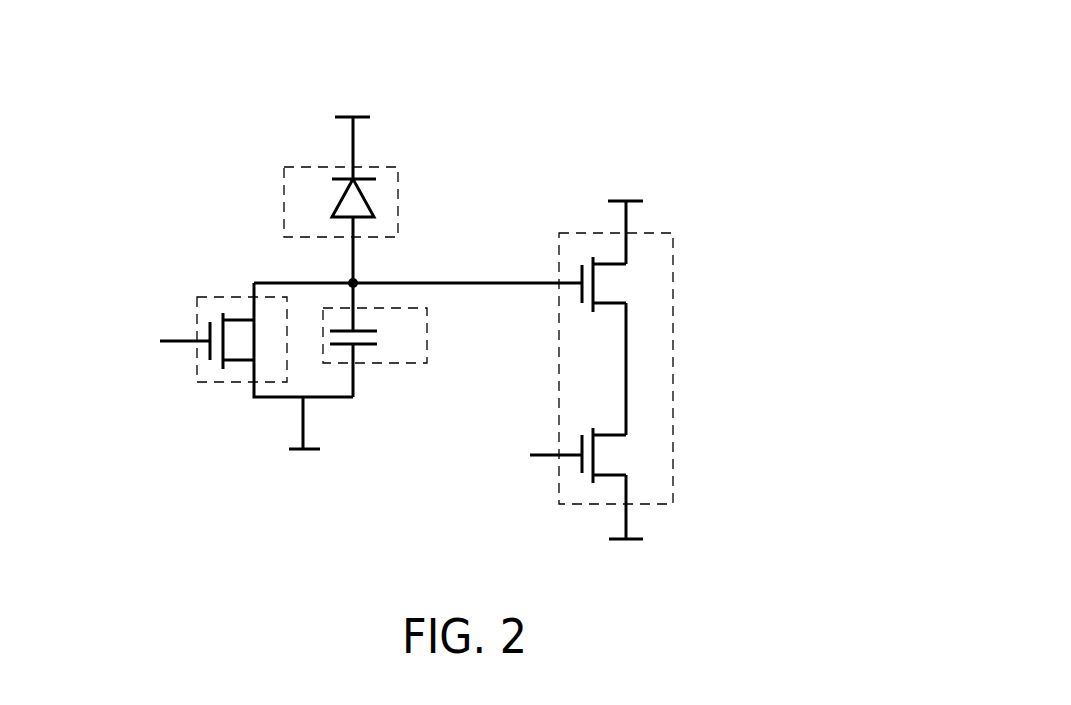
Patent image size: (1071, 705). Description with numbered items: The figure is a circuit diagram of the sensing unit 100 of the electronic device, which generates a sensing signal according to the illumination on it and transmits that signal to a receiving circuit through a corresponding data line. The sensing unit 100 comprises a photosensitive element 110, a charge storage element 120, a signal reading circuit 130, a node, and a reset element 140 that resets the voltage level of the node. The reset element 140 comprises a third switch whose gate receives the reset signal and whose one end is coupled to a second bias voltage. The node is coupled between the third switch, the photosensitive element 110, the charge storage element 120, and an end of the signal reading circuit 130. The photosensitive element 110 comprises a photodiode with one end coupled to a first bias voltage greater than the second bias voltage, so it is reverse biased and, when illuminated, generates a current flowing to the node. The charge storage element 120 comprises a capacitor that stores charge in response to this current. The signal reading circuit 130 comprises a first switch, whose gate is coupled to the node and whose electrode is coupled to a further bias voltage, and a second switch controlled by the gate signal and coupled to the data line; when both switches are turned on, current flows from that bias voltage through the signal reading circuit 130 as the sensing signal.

The sensing unit 100 is at (657, 110).
The photosensitive element 110 is at (398, 203).
The charge storage element 120 is at (427, 337).
The signal reading circuit 130 is at (673, 370).
The reset element 140 is at (216, 298).